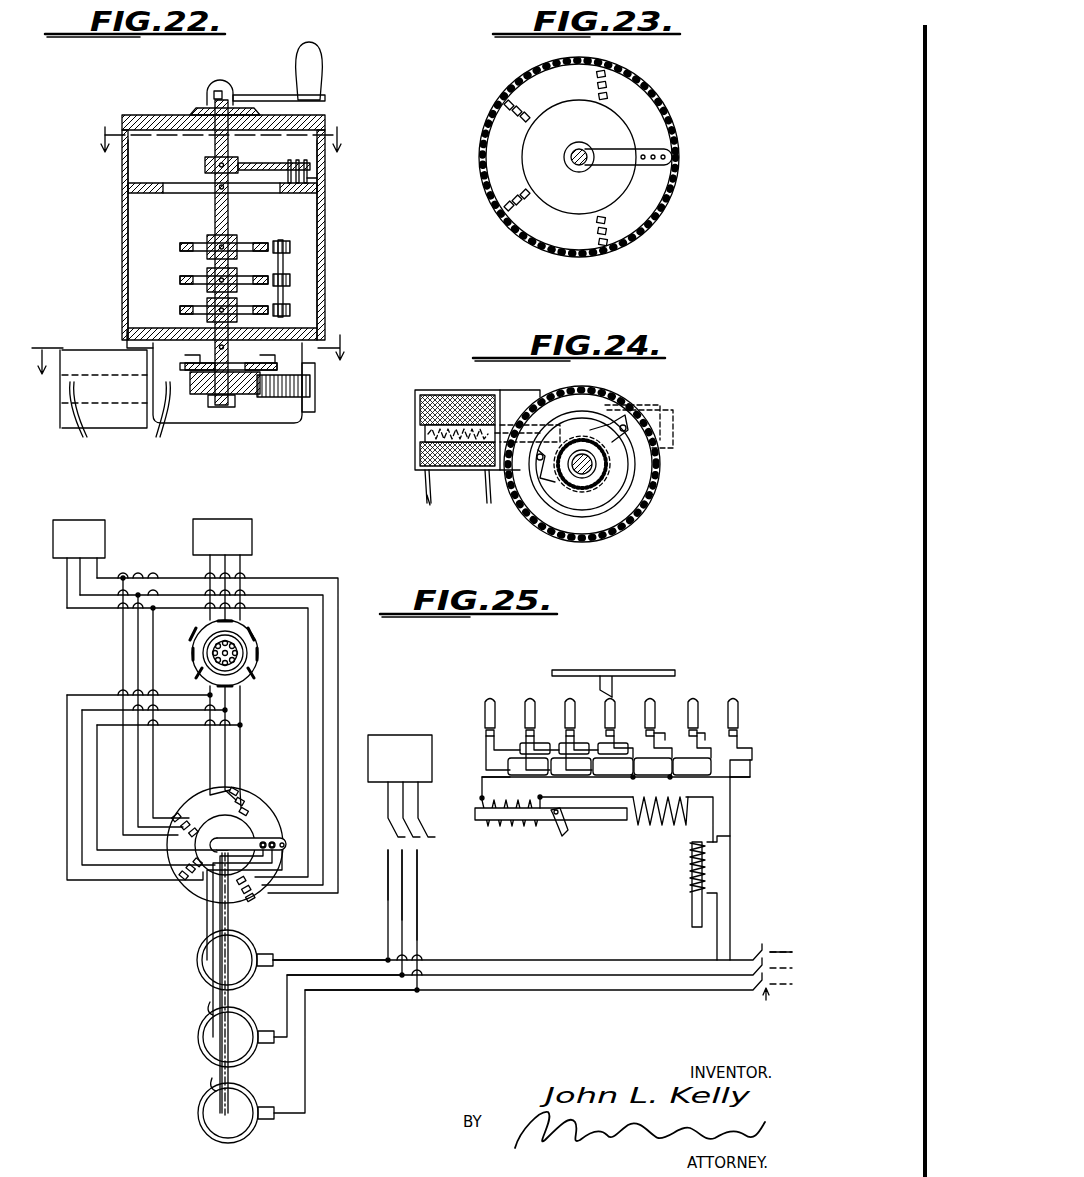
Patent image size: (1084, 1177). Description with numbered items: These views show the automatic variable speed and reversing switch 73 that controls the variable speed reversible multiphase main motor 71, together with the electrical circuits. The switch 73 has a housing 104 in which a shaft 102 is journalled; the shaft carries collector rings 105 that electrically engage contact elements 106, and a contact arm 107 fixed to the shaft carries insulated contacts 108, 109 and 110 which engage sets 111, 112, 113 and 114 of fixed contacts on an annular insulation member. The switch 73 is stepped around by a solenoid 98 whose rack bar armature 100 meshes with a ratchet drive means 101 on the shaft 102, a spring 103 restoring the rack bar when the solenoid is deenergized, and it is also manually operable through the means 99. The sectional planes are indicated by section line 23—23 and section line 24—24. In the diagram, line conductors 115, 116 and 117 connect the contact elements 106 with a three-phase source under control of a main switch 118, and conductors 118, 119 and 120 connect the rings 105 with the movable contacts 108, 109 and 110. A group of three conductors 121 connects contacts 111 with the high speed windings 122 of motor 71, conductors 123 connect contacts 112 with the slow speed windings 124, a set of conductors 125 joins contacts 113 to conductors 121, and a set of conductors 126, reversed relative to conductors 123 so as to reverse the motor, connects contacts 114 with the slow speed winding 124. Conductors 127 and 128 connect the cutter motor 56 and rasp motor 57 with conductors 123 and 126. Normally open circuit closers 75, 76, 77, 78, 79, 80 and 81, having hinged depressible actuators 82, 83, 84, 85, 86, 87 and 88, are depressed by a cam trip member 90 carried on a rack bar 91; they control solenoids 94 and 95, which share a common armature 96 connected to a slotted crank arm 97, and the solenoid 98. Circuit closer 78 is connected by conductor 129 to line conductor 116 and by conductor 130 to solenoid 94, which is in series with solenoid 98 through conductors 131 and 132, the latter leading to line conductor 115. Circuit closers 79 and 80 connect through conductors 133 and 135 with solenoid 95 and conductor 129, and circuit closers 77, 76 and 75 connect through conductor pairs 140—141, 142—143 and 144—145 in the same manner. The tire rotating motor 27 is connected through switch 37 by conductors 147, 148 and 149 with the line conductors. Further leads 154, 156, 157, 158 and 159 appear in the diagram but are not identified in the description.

In FIG. 22, the section line 23— 23 is at (217, 139).
In FIG. 22, the section line 24— 24 is at (200, 353).
In FIG. 25, the tire rotating motor 27 is at (398, 745).
In FIG. 25, the switch 37 is at (379, 839).
In FIG. 25, the cutting tool motor 56 is at (220, 530).
In FIG. 25, the rasp motor 57 is at (85, 530).
In FIG. 25, the variable speed reversible multiphase motor 71 is at (266, 664).
In FIG. 22, the automatic variable speed and reversing switch 73 is at (114, 247).
In FIG. 23, the automatic variable speed and reversing switch 73 is at (675, 104).
In FIG. 25, the circuit control switch 75 is at (483, 722).
In FIG. 25, the circuit control switch 76 is at (526, 730).
In FIG. 25, the circuit control switch 77 is at (566, 731).
In FIG. 25, the circuit control switch 78 is at (606, 732).
In FIG. 25, the circuit control switch 79 is at (646, 731).
In FIG. 25, the circuit control switch 80 is at (689, 731).
In FIG. 25, the circuit control switch 81 is at (738, 730).
In FIG. 25, the hinged depressible actuator 82 is at (488, 700).
In FIG. 25, the hinged depressible actuator 83 is at (529, 700).
In FIG. 25, the hinged depressible actuator 84 is at (568, 703).
In FIG. 25, the hinged depressible actuator 85 is at (607, 705).
In FIG. 25, the hinged depressible actuator 86 is at (655, 705).
In FIG. 25, the hinged depressible actuator 87 is at (698, 703).
In FIG. 25, the hinged depressible actuator 88 is at (738, 703).
In FIG. 25, the cam trip member 90 is at (612, 690).
In FIG. 25, the rack bar 91 is at (584, 670).
In FIG. 25, the solenoid 94 is at (515, 826).
In FIG. 25, the solenoid 95 is at (660, 825).
In FIG. 25, the common armature 96 is at (597, 820).
In FIG. 25, the slotted crank arm 97 is at (555, 835).
In FIG. 22, the solenoid 98 is at (112, 410).
In FIG. 24, the solenoid 98 is at (424, 458).
In FIG. 25, the solenoid 98 is at (688, 884).
In FIG. 22, the manual operating means 99 is at (300, 82).
In FIG. 22, the rack bar armature 100 is at (280, 395).
In FIG. 24, the rack bar armature 100 is at (668, 450).
In FIG. 25, the rack bar armature 100 is at (692, 912).
In FIG. 22, the ratchet drive means 101 is at (278, 367).
In FIG. 24, the ratchet drive means 101 is at (600, 484).
In FIG. 22, the shaft 102 is at (214, 217).
In FIG. 23, the shaft 102 is at (579, 142).
In FIG. 24, the shaft 102 is at (585, 478).
In FIG. 25, the shaft 102 is at (230, 1075).
In FIG. 24, the spring 103 is at (428, 432).
In FIG. 22, the housing 104 is at (121, 277).
In FIG. 23, the housing 104 is at (660, 133).
In FIG. 24, the housing 104 is at (612, 520).
In FIG. 22, the collector rings 105 is at (178, 305).
In FIG. 25, the collector rings 105 is at (197, 962).
In FIG. 22, the contact elements 106 is at (292, 310).
In FIG. 25, the contact elements 106 is at (265, 954).
In FIG. 22, the contact arm 107 is at (205, 165).
In FIG. 23, the contact arm 107 is at (612, 166).
In FIG. 22, the contact 108 is at (289, 160).
In FIG. 23, the contact 108 is at (662, 162).
In FIG. 25, the contact 108 is at (263, 842).
In FIG. 22, the contact 109 is at (300, 160).
In FIG. 23, the contact 109 is at (656, 158).
In FIG. 25, the contact 109 is at (272, 842).
In FIG. 22, the contact 110 is at (310, 178).
In FIG. 23, the contact 110 is at (646, 156).
In FIG. 25, the contact 110 is at (283, 845).
In FIG. 23, the set of fixed contacts 111 is at (622, 87).
In FIG. 25, the set of fixed contacts 111 is at (257, 799).
In FIG. 23, the set of fixed contacts 112 is at (496, 126).
In FIG. 25, the set of fixed contacts 112 is at (194, 803).
In FIG. 23, the set of fixed contacts 113 is at (497, 197).
In FIG. 25, the set of fixed contacts 113 is at (194, 892).
In FIG. 23, the set of fixed contacts 114 is at (620, 235).
In FIG. 25, the set of fixed contacts 114 is at (245, 900).
In FIG. 25, the line conductor 115 is at (515, 960).
In FIG. 25, the line conductor 116 is at (550, 975).
In FIG. 25, the line conductor 117 is at (488, 990).
In FIG. 25, the main switch 118 is at (207, 912).
In FIG. 25, the conductor 119 is at (212, 1000).
In FIG. 25, the conductor 120 is at (213, 1078).
In FIG. 25, the group of three conductors 121 is at (237, 740).
In FIG. 25, the high speed windings 122 is at (245, 645).
In FIG. 25, the conductors 123 is at (140, 650).
In FIG. 25, the slow speed windings 124 is at (190, 642).
In FIG. 25, the set of three conductors 125 is at (70, 795).
In FIG. 25, the set of conductors 126 is at (310, 665).
In FIG. 25, the conductors 127 is at (228, 574).
In FIG. 25, the conductors 128 is at (82, 582).
In FIG. 25, the conductor 129 is at (732, 800).
In FIG. 25, the conductor 130 is at (482, 782).
In FIG. 22, the conductor 131 is at (76, 425).
In FIG. 24, the conductor 131 is at (425, 490).
In FIG. 25, the conductor 131 is at (732, 837).
In FIG. 22, the conductor 132 is at (160, 425).
In FIG. 24, the conductor 132 is at (486, 492).
In FIG. 25, the conductor 132 is at (720, 912).
In FIG. 25, the conductor 133 is at (653, 755).
In FIG. 25, the conductor 135 is at (692, 755).
In FIG. 25, the conductor 140 is at (613, 755).
In FIG. 25, the conductor 141 is at (597, 753).
In FIG. 25, the conductor 142 is at (571, 766).
In FIG. 25, the conductor 143 is at (557, 753).
In FIG. 25, the conductor 144 is at (528, 766).
In FIG. 25, the conductor 145 is at (518, 753).
In FIG. 25, the conductor 147 is at (388, 885).
In FIG. 25, the conductor 148 is at (402, 900).
In FIG. 25, the conductor 149 is at (417, 915).
In FIG. 25, the lead 154 is at (670, 725).
In FIG. 25, the lead 156 is at (712, 725).
In FIG. 25, the lead 157 is at (750, 770).
In FIG. 25, the lead 158 is at (752, 750).
In FIG. 25, the lead 159 is at (701, 789).